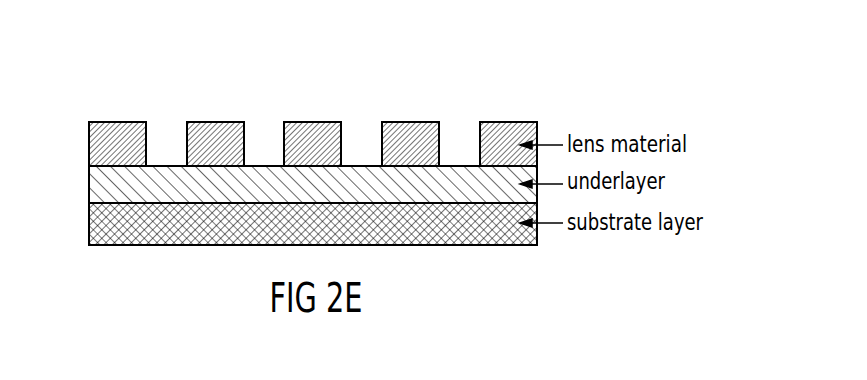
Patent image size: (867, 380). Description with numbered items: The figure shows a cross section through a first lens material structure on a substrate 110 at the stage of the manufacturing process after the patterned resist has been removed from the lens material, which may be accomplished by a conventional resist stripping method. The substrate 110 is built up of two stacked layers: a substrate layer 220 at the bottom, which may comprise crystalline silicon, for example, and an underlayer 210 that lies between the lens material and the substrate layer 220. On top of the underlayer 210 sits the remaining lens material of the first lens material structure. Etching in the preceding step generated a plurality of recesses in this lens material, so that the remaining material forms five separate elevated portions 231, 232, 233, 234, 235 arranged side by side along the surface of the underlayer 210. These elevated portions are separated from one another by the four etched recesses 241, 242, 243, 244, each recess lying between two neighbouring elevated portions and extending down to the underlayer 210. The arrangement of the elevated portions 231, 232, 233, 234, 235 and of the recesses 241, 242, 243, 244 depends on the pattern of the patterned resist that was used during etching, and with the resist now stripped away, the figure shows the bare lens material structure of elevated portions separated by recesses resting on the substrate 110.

The substrate 110 is at (380, 205).
The underlayer 210 is at (88, 182).
The substrate layer 220 is at (88, 218).
The elevated portion 231 is at (123, 127).
The elevated portion 232 is at (221, 127).
The elevated portion 233 is at (319, 127).
The elevated portion 234 is at (417, 127).
The elevated portion 235 is at (513, 127).
The recess 241 is at (168, 163).
The recess 242 is at (266, 163).
The recess 243 is at (365, 163).
The recess 244 is at (463, 163).